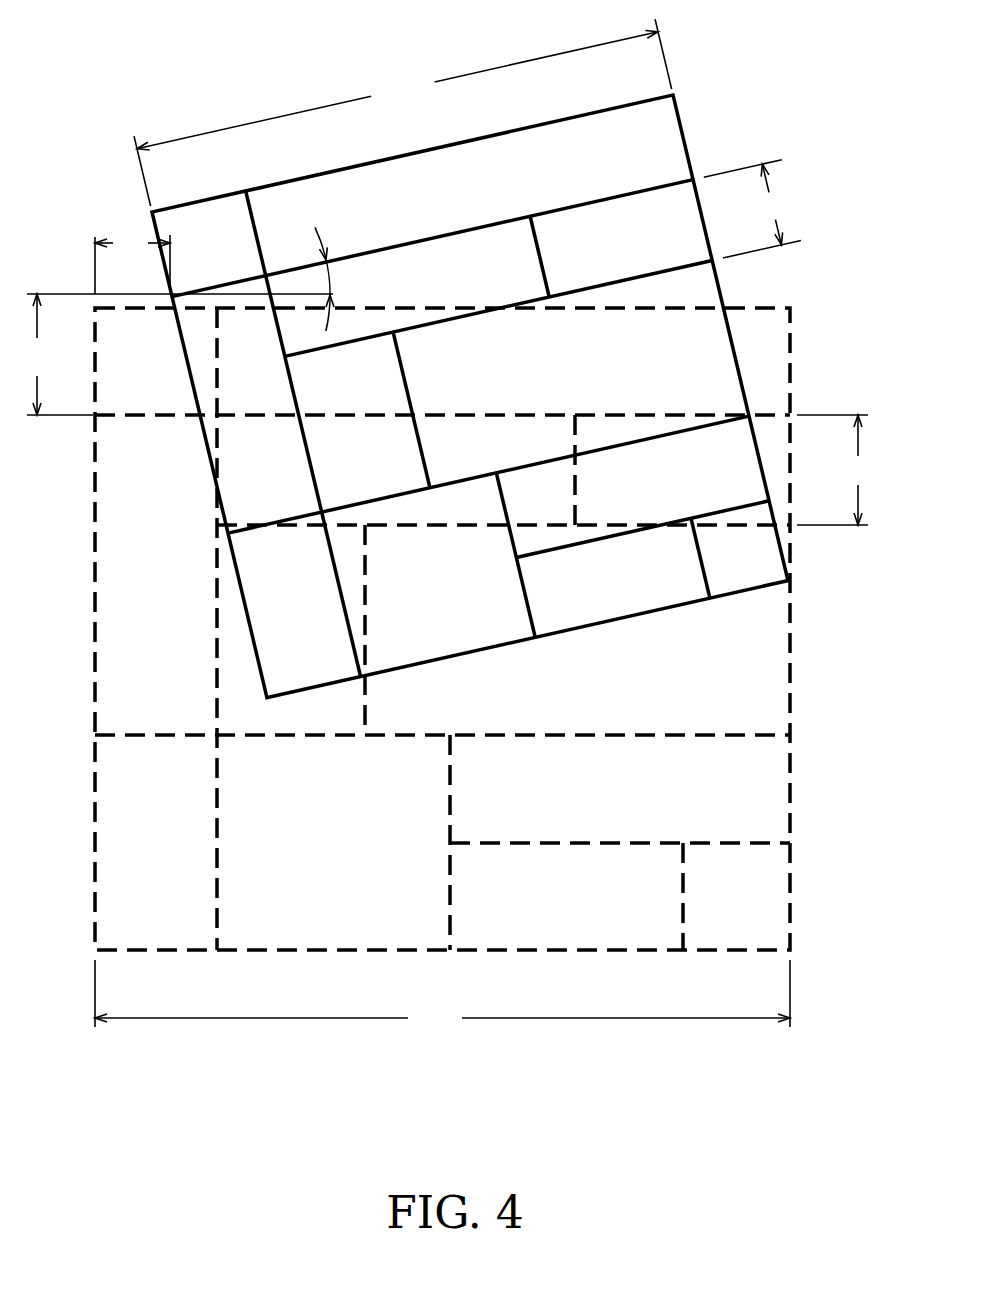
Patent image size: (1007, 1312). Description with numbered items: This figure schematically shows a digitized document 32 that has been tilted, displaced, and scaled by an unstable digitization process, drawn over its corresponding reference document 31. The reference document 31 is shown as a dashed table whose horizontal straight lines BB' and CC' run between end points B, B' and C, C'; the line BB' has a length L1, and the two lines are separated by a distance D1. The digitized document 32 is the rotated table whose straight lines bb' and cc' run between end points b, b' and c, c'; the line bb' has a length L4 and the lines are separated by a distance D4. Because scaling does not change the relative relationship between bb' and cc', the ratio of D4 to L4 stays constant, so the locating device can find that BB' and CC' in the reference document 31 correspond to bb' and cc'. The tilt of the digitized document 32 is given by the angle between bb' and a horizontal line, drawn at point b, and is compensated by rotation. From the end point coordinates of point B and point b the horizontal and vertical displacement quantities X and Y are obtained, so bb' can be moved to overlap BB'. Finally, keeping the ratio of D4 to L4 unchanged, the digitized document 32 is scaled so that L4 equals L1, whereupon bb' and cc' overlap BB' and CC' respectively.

The reference document 31 is at (790, 785).
The digitized document 32 is at (686, 121).
The length of the straight line BB' L1 is at (442, 998).
The length of the straight line bb' L4 is at (403, 112).
The distance between the straight lines BB' and CC' D1 is at (838, 470).
The distance between the straight lines bb' and cc' D4 is at (752, 209).
The horizontal displacement quantity X is at (132, 260).
The vertical displacement quantity Y is at (179, 354).
The point b is at (185, 272).
The point b' is at (710, 156).
The point c is at (264, 357).
The point c' is at (736, 271).
The point B is at (75, 439).
The point B' is at (816, 396).
The point C is at (193, 527).
The point C' is at (813, 549).